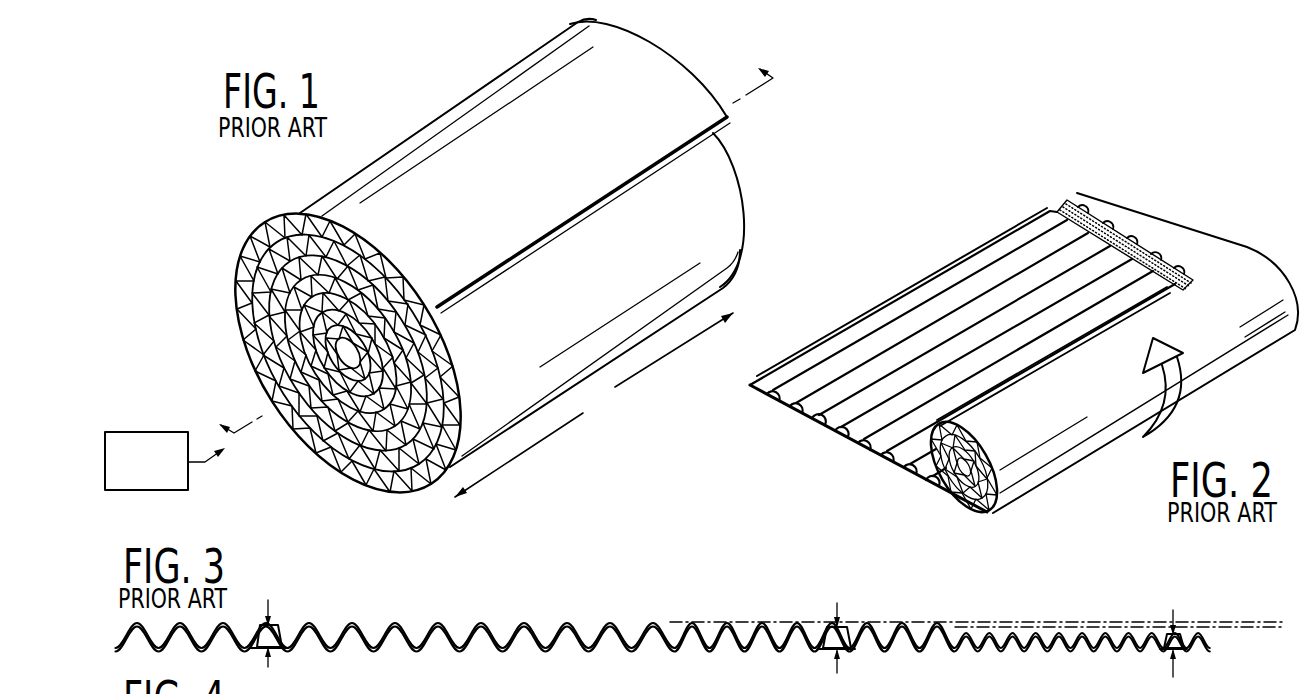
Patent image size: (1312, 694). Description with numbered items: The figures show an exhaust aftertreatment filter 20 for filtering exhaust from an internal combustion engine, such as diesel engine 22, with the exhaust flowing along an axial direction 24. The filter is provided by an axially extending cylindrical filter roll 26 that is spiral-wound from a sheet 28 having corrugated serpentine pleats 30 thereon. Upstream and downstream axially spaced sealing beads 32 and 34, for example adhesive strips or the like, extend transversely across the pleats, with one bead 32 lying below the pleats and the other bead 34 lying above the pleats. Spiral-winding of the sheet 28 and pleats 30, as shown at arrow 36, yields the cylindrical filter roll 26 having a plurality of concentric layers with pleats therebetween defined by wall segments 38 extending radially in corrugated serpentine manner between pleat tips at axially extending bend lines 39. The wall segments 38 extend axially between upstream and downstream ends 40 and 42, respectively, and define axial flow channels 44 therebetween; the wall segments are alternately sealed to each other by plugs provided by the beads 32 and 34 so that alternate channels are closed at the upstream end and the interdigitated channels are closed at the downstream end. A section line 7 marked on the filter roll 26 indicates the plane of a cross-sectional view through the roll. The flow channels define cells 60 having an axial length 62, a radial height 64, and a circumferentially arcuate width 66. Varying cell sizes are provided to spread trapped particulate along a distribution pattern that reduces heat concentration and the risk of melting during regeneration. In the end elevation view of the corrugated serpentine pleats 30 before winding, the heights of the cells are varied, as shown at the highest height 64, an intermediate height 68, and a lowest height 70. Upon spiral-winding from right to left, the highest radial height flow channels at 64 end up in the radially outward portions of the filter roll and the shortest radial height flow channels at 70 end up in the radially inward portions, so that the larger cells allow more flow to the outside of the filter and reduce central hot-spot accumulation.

In FIG. 1, the section line 7- 7 is at (500, 264).
In FIG. 1, the exhaust aftertreatment filter 20 is at (385, 126).
In FIG. 1, the diesel engine 22 is at (152, 432).
In FIG. 1, the axial direction 24 is at (197, 462).
In FIG. 1, the cylindrical filter roll 26 is at (347, 197).
In FIG. 1, the sheet 28 is at (437, 310).
In FIG. 2, the sheet 28 is at (987, 512).
In FIG. 1, the corrugated serpentine pleats 30 is at (440, 322).
In FIG. 2, the corrugated serpentine pleats 30 is at (853, 428).
In FIG. 3, the corrugated serpentine pleats 30 is at (320, 632).
In FIG. 2, the upstream sealing bead 32 is at (820, 427).
In FIG. 2, the downstream sealing bead 34 is at (1167, 253).
In FIG. 2, the spiral-winding arrow 36 is at (1190, 413).
In FIG. 1, the wall segments 38 is at (258, 238).
In FIG. 2, the axially extending bend lines 39 is at (883, 343).
In FIG. 1, the upstream end 40 is at (242, 317).
In FIG. 2, the upstream end 40 is at (773, 403).
In FIG. 1, the downstream end 42 is at (742, 200).
In FIG. 2, the downstream end 42 is at (1137, 222).
In FIG. 1, the axial flow channels 44 is at (420, 304).
In FIG. 1, the cells 60 is at (407, 495).
In FIG. 1, the axial length 62 is at (594, 405).
In FIG. 1, the radial height (highest height) 64 is at (391, 502).
In FIG. 3, the radial height (highest height) 64 is at (268, 665).
In FIG. 1, the circumferentially arcuate width 66 is at (357, 485).
In FIG. 3, the intermediate height 68 is at (837, 668).
In FIG. 3, the lowest height 70 is at (1173, 670).